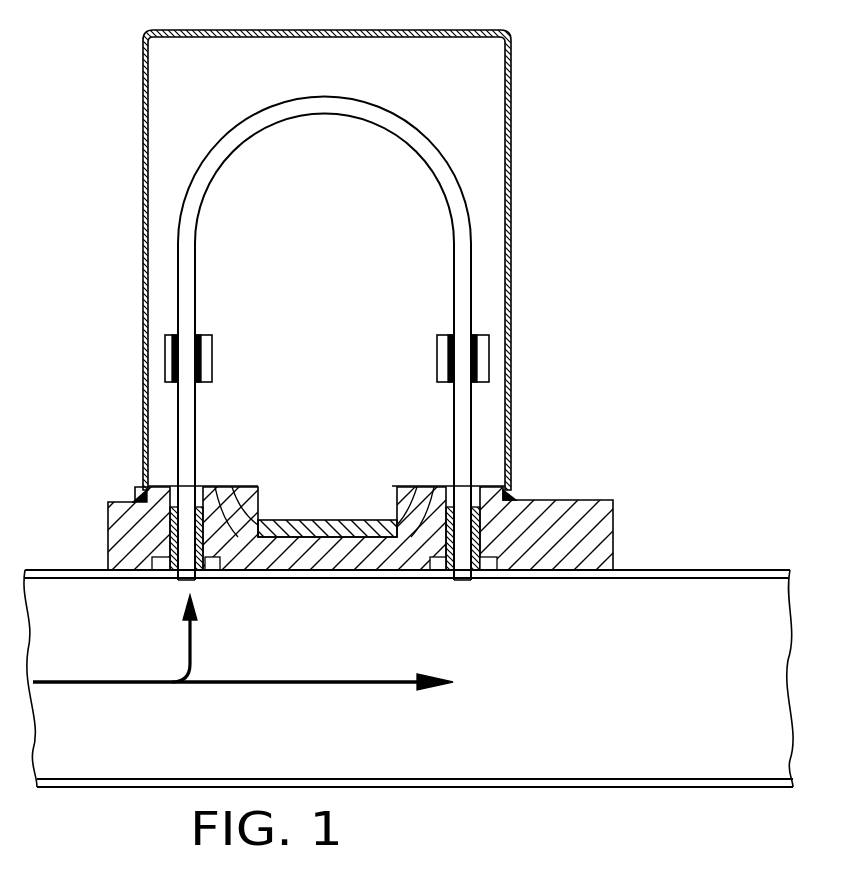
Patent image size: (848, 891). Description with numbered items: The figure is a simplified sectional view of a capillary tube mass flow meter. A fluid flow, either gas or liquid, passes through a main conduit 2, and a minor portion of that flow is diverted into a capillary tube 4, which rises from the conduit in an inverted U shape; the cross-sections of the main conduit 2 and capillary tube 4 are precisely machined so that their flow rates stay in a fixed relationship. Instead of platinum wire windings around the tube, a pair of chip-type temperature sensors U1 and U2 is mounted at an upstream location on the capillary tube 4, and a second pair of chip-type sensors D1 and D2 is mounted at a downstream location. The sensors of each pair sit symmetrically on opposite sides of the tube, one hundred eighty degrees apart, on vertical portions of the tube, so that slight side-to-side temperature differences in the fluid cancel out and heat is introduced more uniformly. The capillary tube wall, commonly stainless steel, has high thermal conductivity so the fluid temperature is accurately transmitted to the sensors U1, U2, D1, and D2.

The main conduit 2 is at (52, 570).
The capillary tube 4 is at (177, 281).
The chip-type temperature sensor U1 is at (165, 357).
The chip-type temperature sensor U2 is at (212, 358).
The chip-type temperature sensor D1 is at (489, 357).
The chip-type temperature sensor D2 is at (437, 357).